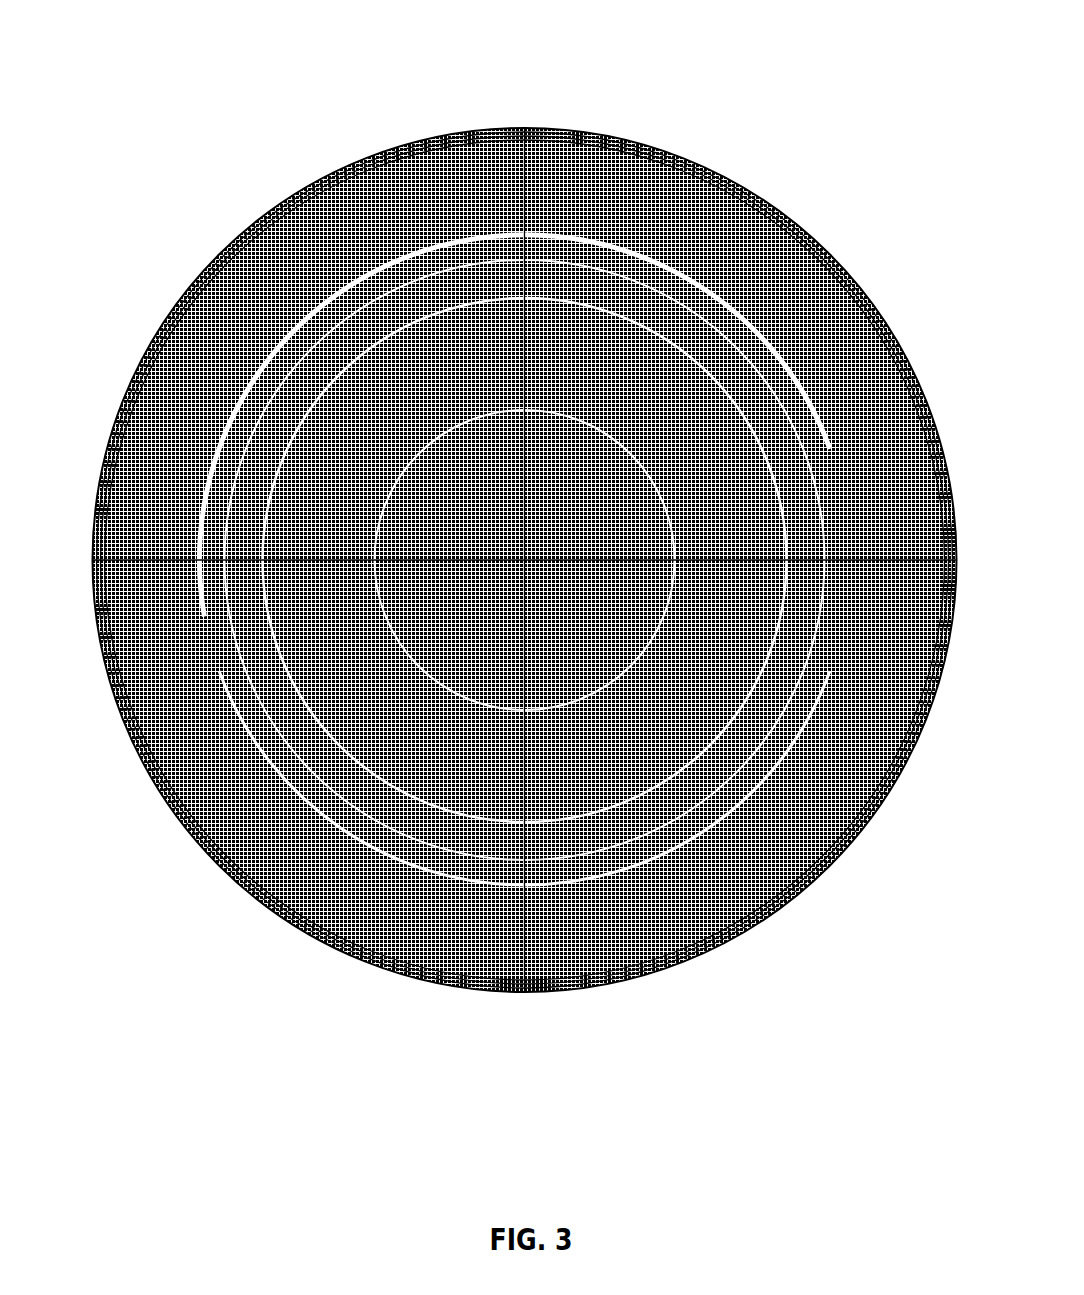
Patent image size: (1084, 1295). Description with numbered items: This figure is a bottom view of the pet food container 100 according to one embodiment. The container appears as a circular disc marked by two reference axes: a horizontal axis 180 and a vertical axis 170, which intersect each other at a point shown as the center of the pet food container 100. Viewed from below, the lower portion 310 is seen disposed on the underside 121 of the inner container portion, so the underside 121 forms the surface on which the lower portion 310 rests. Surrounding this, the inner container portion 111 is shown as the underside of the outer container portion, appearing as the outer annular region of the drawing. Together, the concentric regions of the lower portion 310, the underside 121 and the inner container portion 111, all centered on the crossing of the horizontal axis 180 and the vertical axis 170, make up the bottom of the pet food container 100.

The pet food container 100 is at (515, 30).
The inner container portion 111 is at (697, 165).
The underside 121 is at (222, 257).
The lower portion 310 is at (880, 312).
The vertical axis 170 is at (525, 129).
The horizontal axis 180 is at (101, 565).